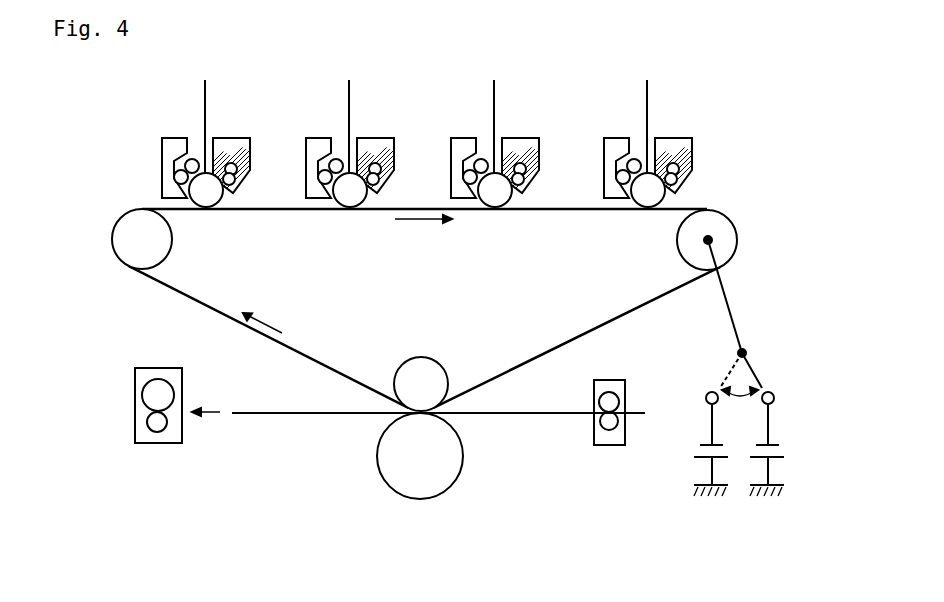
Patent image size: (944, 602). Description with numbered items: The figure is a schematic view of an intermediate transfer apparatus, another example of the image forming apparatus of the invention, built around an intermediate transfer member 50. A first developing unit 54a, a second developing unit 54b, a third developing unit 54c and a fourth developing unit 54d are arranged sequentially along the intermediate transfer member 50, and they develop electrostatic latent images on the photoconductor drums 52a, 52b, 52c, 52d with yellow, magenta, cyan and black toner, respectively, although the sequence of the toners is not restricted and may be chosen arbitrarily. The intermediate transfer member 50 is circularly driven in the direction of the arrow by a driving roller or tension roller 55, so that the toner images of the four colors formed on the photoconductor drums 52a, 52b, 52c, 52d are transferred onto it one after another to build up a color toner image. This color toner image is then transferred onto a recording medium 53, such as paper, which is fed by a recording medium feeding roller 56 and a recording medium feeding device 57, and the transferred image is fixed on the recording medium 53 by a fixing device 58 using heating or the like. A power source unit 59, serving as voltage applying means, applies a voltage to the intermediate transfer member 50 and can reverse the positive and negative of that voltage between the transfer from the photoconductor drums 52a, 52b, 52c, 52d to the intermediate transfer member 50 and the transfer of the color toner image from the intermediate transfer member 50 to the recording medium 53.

The intermediate transfer member 50 is at (197, 303).
The photoconductor drum 52a is at (200, 196).
The photoconductor drum 52b is at (344, 196).
The photoconductor drum 52c is at (489, 196).
The photoconductor drum 52d is at (642, 196).
The recording medium 53 is at (534, 415).
The first developing unit 54a is at (234, 127).
The second developing unit 54b is at (378, 127).
The third developing unit 54c is at (523, 127).
The fourth developing unit 54d is at (676, 127).
The driving roller or tension roller 55 is at (132, 238).
The recording medium feeding roller 56 is at (422, 480).
The recording medium feeding device 57 is at (610, 448).
The fixing device 58 is at (160, 445).
The power source unit 59 is at (761, 361).